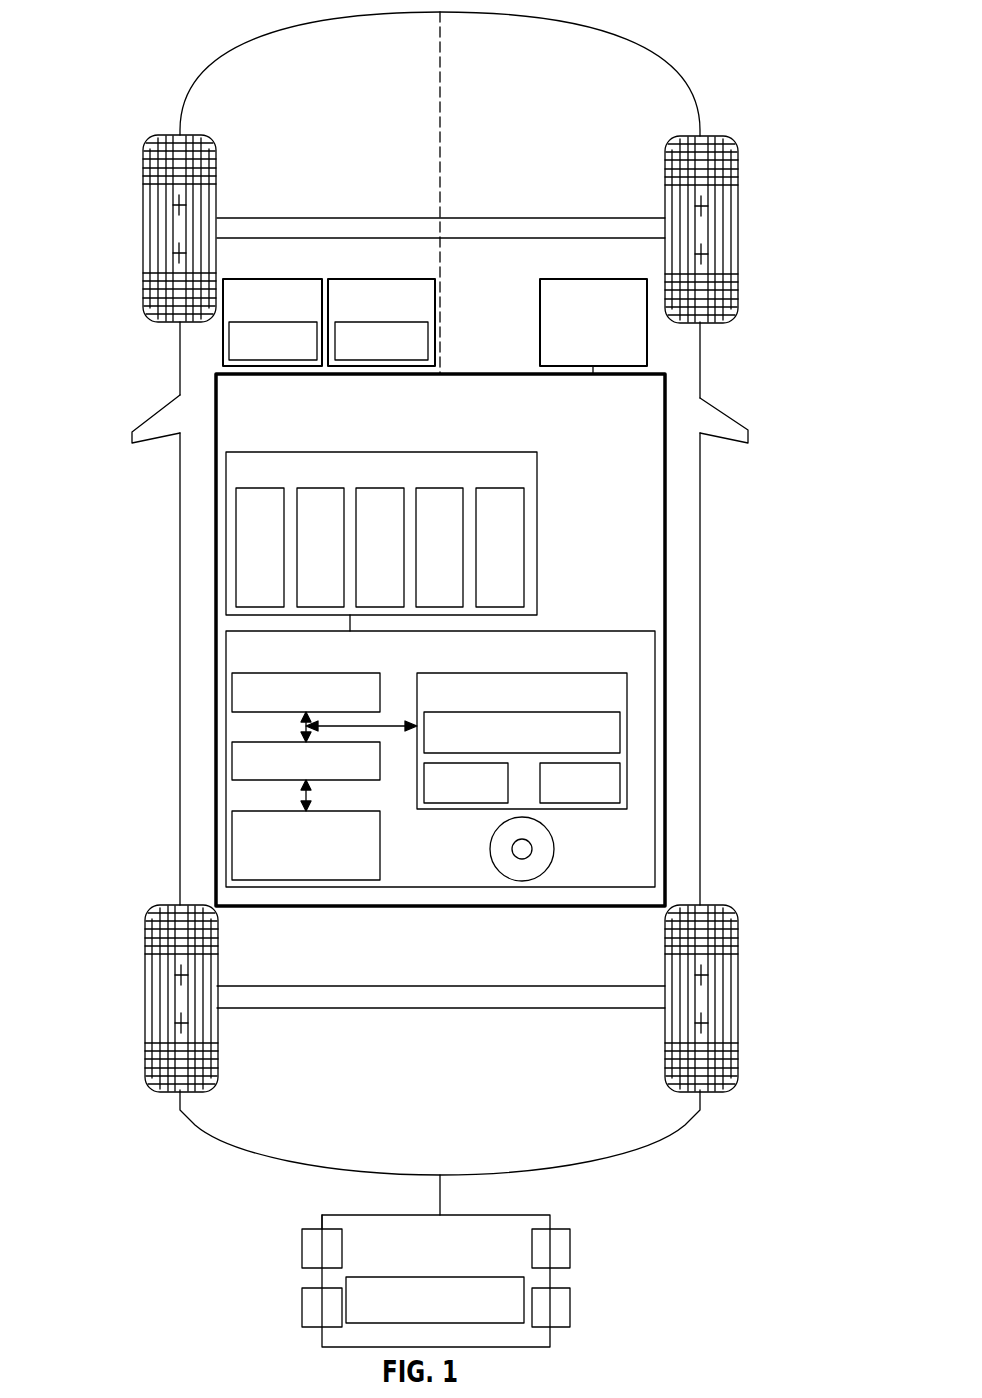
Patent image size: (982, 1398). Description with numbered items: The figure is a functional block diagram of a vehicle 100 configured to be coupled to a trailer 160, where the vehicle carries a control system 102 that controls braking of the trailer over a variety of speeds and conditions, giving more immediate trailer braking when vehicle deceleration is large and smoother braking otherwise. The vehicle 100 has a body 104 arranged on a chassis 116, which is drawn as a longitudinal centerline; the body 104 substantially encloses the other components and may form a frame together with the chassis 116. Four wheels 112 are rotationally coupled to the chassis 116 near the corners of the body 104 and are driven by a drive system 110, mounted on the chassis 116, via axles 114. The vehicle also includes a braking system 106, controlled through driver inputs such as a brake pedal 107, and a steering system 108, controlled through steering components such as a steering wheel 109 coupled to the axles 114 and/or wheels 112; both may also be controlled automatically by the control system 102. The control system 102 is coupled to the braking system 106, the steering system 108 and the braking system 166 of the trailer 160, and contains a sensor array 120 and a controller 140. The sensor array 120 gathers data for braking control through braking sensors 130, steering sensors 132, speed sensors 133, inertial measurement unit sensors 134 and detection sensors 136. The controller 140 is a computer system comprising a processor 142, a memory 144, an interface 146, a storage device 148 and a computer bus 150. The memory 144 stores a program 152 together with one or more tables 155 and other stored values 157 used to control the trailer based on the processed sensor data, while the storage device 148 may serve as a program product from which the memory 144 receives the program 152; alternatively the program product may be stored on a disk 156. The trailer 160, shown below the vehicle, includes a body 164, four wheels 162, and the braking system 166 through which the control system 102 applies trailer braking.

The vehicle 100 is at (138, 84).
The control system 102 is at (458, 373).
The body 104 is at (178, 452).
The braking system 106 is at (292, 278).
The brake pedal 107 is at (229, 340).
The steering system 108 is at (385, 278).
The steering wheel 109 is at (428, 338).
The drive system 110 is at (592, 279).
The wheels 112 is at (141, 224).
The axles 114 is at (300, 230).
The chassis 116 is at (441, 95).
The sensor array 120 is at (292, 452).
The braking sensors 130 is at (236, 547).
The steering sensors 132 is at (297, 588).
The speed sensors 133 is at (356, 598).
The inertial measurement unit sensors 134 is at (450, 488).
The detection sensors 136 is at (524, 524).
The controller 140 is at (226, 648).
The processor 142 is at (232, 685).
The memory 144 is at (627, 680).
The interface 146 is at (232, 760).
The storage device 148 is at (343, 880).
The computer bus 150 is at (305, 726).
The program 152 is at (620, 730).
The tables 155 is at (476, 803).
The disk 156 is at (522, 881).
The stored values 157 is at (620, 780).
The trailer 160 is at (537, 1215).
The wheels 162 is at (302, 1258).
The body 164 is at (322, 1213).
The braking system 166 is at (458, 1277).